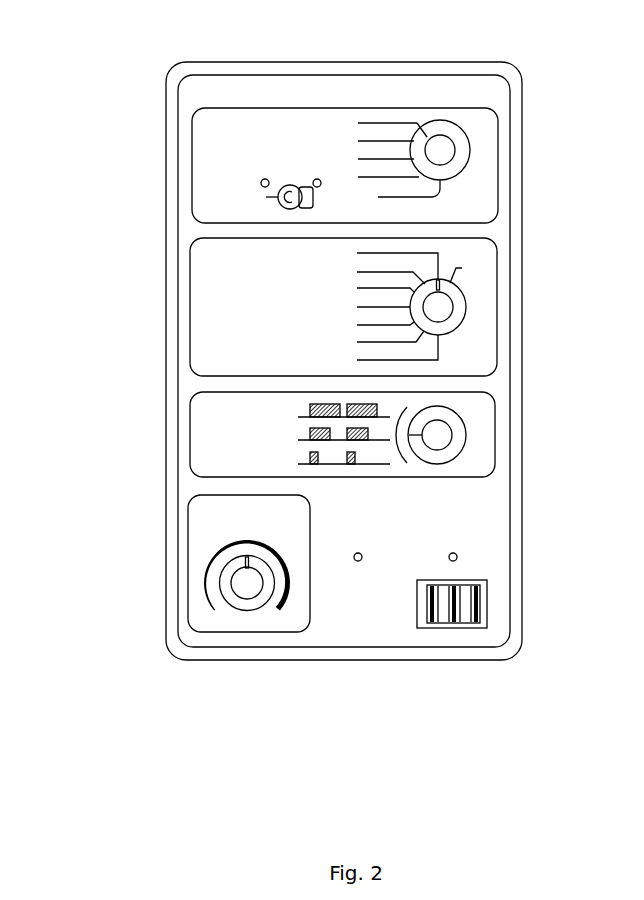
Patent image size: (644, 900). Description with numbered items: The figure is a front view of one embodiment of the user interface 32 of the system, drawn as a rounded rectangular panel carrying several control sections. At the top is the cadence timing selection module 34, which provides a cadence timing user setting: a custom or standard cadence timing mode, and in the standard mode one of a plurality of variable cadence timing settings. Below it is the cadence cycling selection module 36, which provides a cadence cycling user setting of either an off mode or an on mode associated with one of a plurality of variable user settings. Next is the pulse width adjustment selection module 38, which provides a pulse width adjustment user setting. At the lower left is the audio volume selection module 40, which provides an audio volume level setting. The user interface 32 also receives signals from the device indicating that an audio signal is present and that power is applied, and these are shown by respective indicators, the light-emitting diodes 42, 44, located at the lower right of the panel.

The user interface 32 is at (158, 88).
The cadence timing selection module 34 is at (190, 162).
The cadence cycling selection module 36 is at (190, 303).
The pulse width adjustment selection module 38 is at (190, 425).
The audio volume selection module 40 is at (187, 569).
The light-emitting diode 42 is at (362, 554).
The light-emitting diode 44 is at (459, 556).